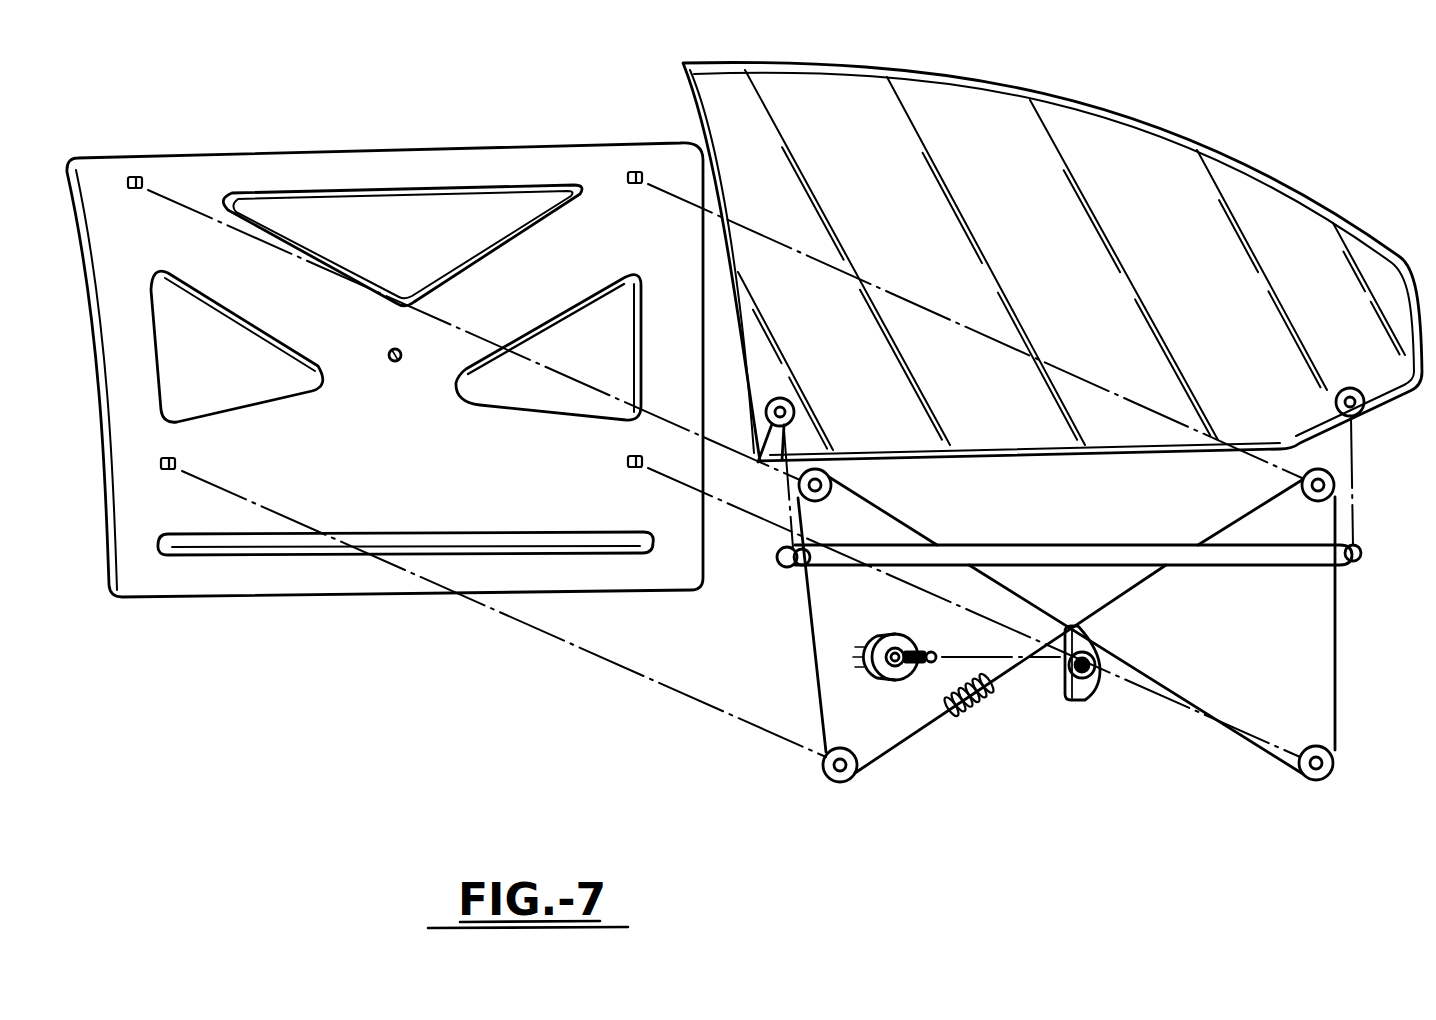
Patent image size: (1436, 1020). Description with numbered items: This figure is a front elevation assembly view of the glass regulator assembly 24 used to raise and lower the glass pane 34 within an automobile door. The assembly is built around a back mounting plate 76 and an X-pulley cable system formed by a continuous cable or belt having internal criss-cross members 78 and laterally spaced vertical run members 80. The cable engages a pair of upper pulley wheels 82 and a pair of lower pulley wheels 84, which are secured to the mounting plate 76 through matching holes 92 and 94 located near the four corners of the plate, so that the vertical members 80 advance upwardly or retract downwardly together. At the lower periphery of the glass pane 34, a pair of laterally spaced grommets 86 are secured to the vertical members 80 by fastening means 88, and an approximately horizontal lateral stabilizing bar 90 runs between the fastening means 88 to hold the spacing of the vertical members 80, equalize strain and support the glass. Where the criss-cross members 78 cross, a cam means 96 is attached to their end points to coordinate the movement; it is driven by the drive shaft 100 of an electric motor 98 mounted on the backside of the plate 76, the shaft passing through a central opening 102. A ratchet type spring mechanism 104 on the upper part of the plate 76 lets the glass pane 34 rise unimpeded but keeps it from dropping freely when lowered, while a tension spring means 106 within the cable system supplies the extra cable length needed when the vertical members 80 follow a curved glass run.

The glass regulator assembly 24 is at (500, 660).
The glass pane 34 is at (1207, 150).
The back mounting plate 76 is at (400, 155).
The criss-cross members 78 is at (902, 748).
The vertical run members 80 is at (810, 647).
The upper pulley wheels 82 is at (832, 478).
The lower pulley wheels 84 is at (845, 782).
The grommets 86 is at (762, 462).
The fastening means 88 is at (793, 568).
The lateral stabilizing bar 90 is at (1068, 545).
The matching holes 92 is at (133, 177).
The matching holes 94 is at (160, 463).
The cam means 96 is at (1083, 700).
The electric motor 98 is at (892, 634).
The drive shaft 100 is at (922, 668).
The central opening 102 is at (398, 350).
The ratchet type spring mechanism 104 is at (1095, 680).
The tension spring means 106 is at (990, 708).